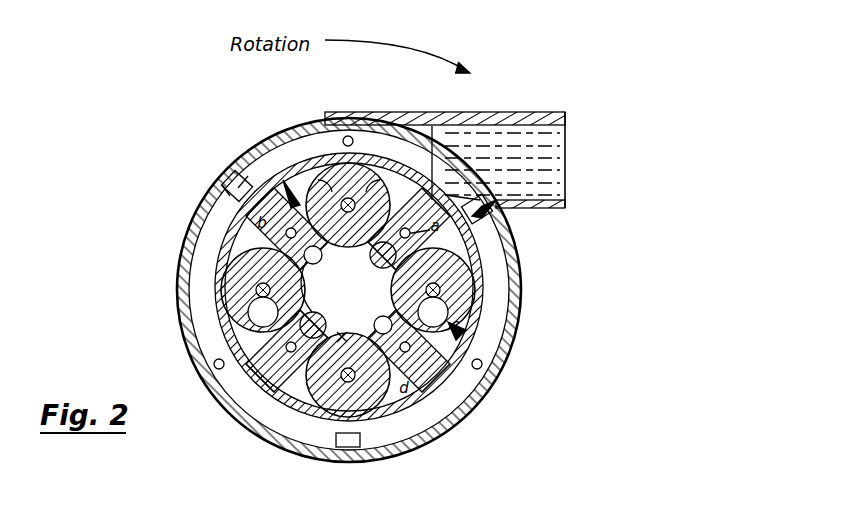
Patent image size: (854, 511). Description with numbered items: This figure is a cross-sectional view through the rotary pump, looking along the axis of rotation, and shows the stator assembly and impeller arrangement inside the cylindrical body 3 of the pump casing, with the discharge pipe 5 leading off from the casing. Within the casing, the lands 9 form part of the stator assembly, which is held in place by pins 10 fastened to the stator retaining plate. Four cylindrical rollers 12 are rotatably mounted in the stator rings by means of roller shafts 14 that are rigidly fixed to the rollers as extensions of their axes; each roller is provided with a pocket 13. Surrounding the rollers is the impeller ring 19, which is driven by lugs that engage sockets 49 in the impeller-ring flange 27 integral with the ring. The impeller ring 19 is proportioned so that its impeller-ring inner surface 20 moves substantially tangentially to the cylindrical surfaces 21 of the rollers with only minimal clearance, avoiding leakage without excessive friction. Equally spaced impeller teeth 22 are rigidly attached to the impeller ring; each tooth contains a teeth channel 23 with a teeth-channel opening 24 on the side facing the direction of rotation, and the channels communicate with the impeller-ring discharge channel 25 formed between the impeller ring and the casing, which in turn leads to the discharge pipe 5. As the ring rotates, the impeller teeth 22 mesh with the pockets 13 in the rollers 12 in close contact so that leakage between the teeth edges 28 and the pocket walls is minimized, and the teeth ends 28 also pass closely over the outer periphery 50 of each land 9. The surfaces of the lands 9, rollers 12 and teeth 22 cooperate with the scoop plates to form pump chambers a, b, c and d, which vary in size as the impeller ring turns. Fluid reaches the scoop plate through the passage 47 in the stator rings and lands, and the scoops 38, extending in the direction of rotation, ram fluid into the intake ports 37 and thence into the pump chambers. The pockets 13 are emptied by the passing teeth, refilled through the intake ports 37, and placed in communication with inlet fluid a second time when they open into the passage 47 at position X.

The cylindrical body 3 is at (185, 230).
The discharge pipe 5 is at (513, 114).
The lands 9 is at (303, 383).
The pins 10 is at (320, 318).
The cylindrical rollers 12 is at (310, 195).
The pockets 13 is at (262, 310).
The roller shafts 14 is at (362, 196).
The impeller ring 19 is at (400, 235).
The impeller-ring inner surface 20 is at (445, 195).
The cylindrical surfaces 21 is at (432, 200).
The impeller teeth 22 is at (332, 185).
The teeth channels 23 is at (347, 165).
The teeth-channel openings 24 is at (388, 215).
The impeller-ring discharge channel 25 is at (238, 188).
The impeller-ring flange 27 is at (222, 185).
The teeth edges 28 is at (347, 191).
The intake ports 37 is at (297, 208).
The scoops 38 is at (247, 202).
The passage 47 is at (355, 321).
The sockets 49 is at (215, 245).
The outer periphery 50 is at (482, 218).